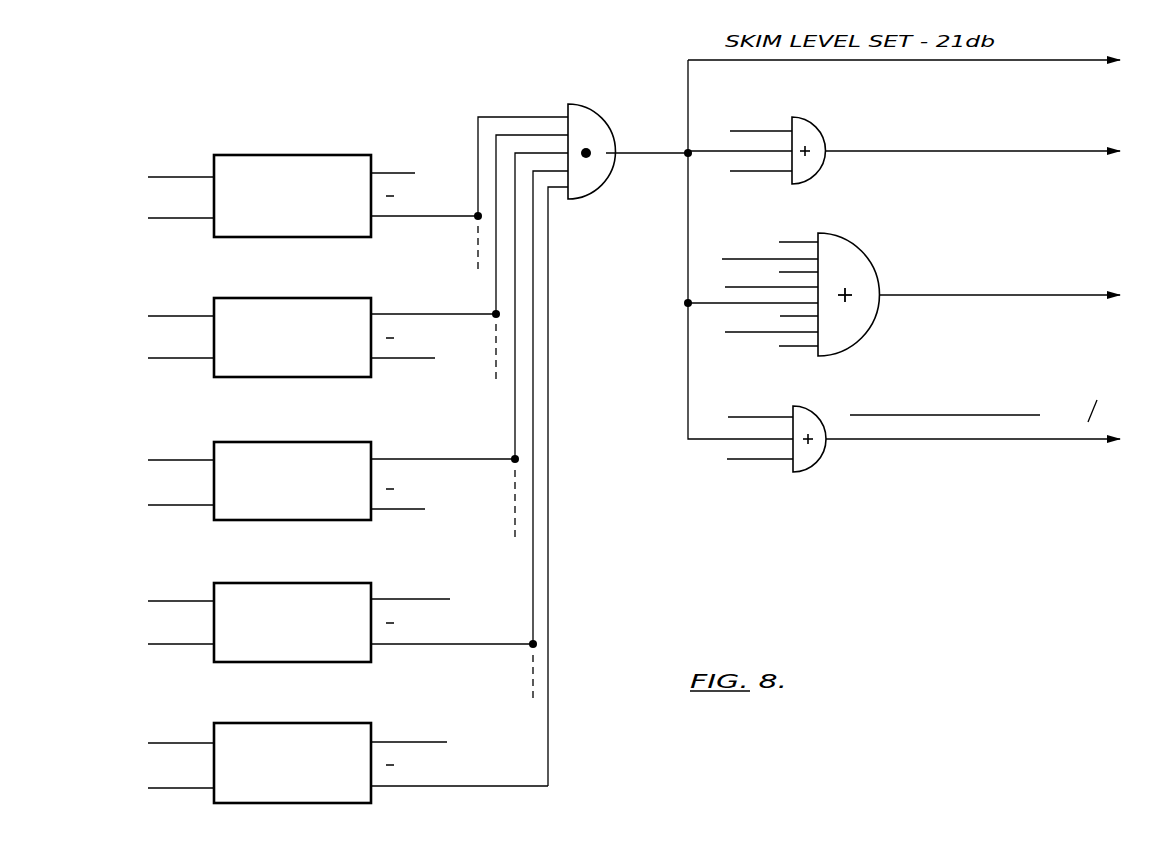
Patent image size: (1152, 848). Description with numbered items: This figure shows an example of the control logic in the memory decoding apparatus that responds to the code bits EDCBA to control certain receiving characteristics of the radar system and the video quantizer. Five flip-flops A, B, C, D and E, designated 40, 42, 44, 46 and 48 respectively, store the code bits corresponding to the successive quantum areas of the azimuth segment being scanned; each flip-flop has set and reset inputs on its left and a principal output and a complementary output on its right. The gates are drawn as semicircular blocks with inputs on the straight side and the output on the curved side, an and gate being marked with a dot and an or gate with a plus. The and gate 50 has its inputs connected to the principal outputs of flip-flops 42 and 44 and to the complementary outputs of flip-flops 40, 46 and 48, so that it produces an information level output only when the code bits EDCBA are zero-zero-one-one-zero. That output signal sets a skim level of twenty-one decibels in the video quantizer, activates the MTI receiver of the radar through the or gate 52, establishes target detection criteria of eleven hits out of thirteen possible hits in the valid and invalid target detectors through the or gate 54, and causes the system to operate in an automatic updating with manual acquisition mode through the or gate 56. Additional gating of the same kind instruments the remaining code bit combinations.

The flip-flop A 40 is at (322, 165).
The flip-flop B 42 is at (310, 300).
The flip-flop C 44 is at (323, 443).
The flip-flop D 46 is at (348, 570).
The flip-flop E 48 is at (345, 710).
The and gate 50 is at (583, 128).
The or gate 52 is at (803, 128).
The or gate 54 is at (828, 402).
The or gate 56 is at (838, 242).